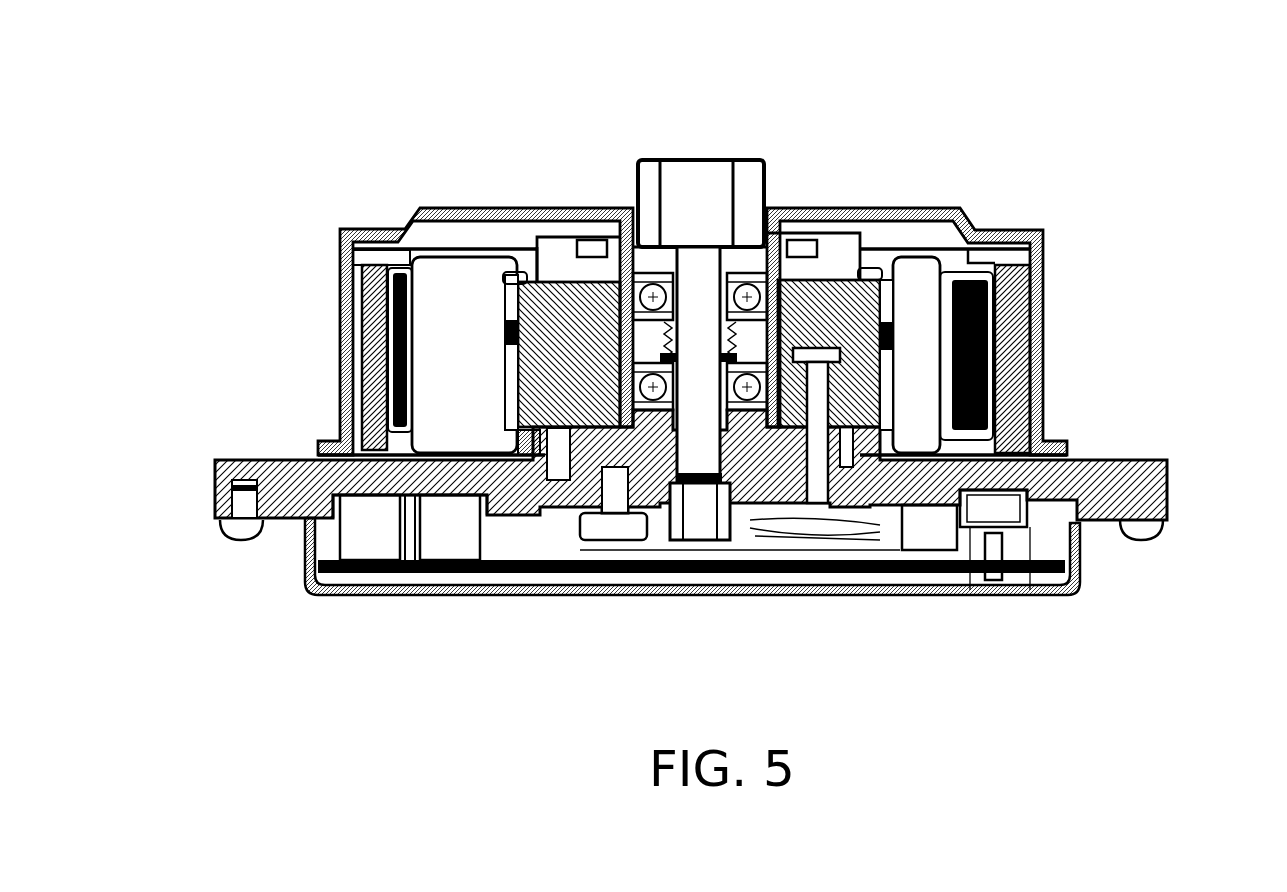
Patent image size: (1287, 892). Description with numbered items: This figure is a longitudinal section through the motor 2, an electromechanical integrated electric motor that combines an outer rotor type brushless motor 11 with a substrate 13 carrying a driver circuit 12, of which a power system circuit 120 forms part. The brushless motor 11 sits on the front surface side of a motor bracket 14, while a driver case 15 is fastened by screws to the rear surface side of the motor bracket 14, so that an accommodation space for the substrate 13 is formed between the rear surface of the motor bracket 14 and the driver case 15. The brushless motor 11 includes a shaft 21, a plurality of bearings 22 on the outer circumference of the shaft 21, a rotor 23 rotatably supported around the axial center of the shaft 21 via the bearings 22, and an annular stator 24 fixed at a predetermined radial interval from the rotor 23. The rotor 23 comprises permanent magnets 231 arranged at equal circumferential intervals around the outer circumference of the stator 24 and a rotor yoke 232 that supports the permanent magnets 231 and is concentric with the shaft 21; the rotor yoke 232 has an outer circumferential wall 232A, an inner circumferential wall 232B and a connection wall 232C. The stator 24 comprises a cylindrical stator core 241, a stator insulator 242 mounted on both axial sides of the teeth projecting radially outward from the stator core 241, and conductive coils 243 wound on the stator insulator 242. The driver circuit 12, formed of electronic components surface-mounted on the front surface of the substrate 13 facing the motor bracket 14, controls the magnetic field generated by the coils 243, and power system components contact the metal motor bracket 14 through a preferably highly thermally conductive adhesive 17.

The motor 2 is at (266, 129).
The brushless motor 11 is at (236, 307).
The driver circuit 12 is at (637, 556).
The substrate 13 is at (1037, 572).
The motor bracket 14 is at (1167, 485).
The driver case 15 is at (697, 580).
The adhesive 17 is at (330, 503).
The shaft 21 is at (701, 233).
The bearings 22 is at (801, 345).
The rotor 23 is at (1062, 218).
The stator 24 is at (477, 537).
The power system circuit 120 is at (363, 535).
The permanent magnets 231 is at (375, 300).
The rotor yoke 232 is at (658, 285).
The outer circumferential wall 232A is at (350, 348).
The inner circumferential wall 232B is at (571, 257).
The connection wall 232C is at (476, 207).
The stator core 241 is at (556, 258).
The stator insulator 242 is at (398, 250).
The coils 243 is at (436, 359).